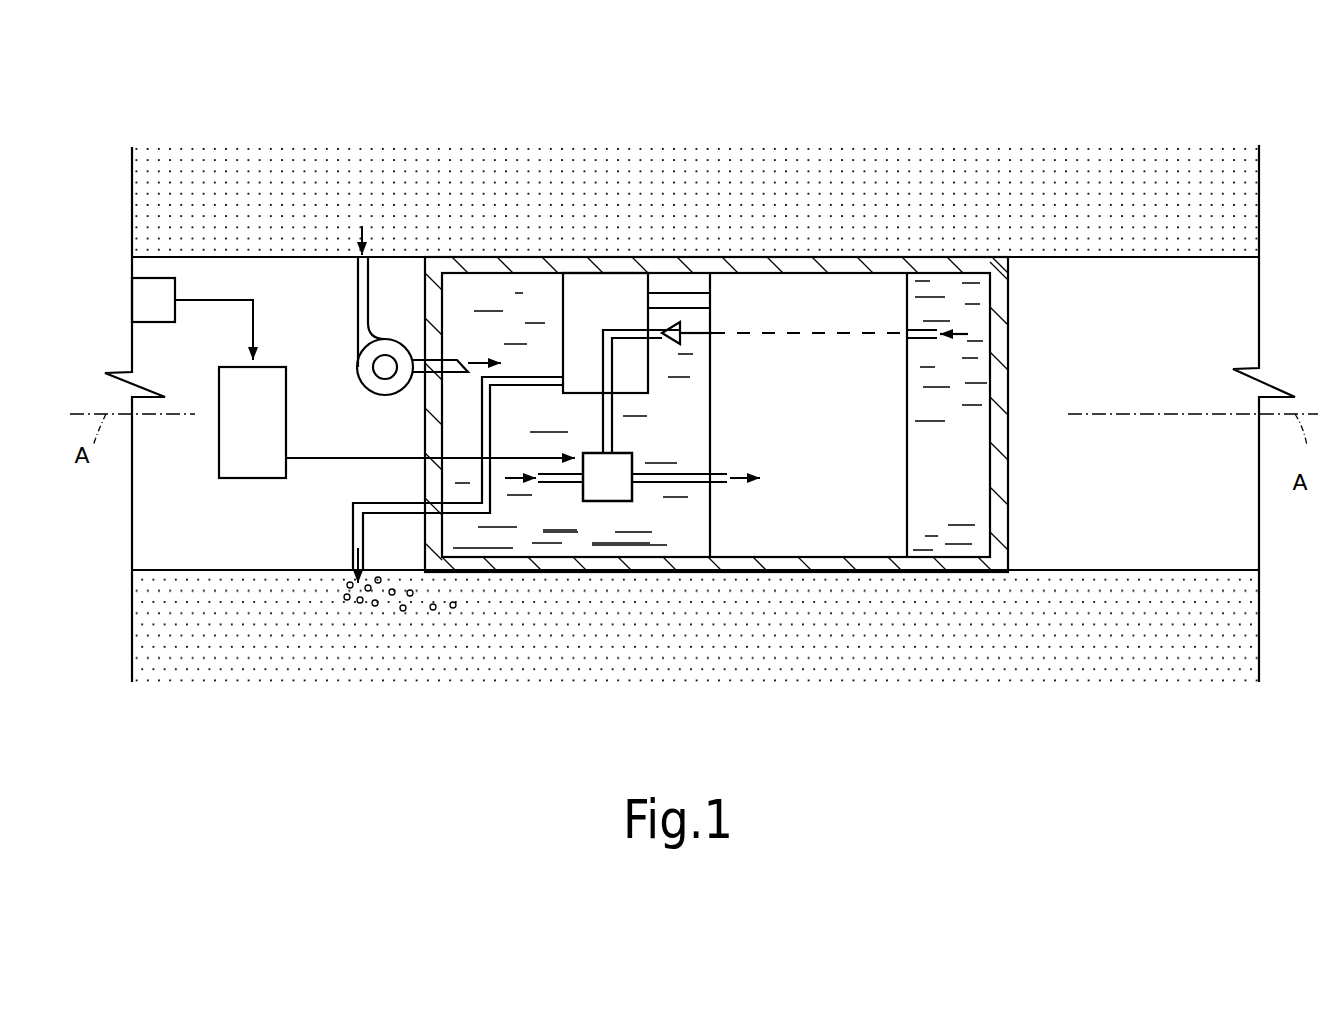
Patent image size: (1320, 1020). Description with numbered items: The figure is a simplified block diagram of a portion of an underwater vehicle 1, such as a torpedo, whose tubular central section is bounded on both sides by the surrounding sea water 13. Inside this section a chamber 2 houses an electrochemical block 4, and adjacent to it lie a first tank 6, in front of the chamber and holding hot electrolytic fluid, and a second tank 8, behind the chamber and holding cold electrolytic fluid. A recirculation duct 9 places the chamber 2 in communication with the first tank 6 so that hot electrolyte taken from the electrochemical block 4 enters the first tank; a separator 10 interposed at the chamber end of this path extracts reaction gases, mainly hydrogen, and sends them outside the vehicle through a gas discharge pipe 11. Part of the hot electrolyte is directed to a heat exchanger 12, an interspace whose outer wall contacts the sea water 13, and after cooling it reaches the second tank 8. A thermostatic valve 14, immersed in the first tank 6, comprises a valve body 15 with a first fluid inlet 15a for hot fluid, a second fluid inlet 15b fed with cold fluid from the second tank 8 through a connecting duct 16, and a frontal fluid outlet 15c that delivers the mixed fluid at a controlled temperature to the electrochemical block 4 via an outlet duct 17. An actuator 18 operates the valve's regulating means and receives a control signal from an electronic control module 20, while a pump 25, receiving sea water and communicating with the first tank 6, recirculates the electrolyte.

The underwater vehicle 1 is at (1037, 170).
The chamber 2 is at (812, 300).
The electrochemical block 4 is at (805, 514).
The first tank 6 is at (575, 508).
The second tank 8 is at (954, 546).
The recirculation duct 9 is at (676, 297).
The separator 10 is at (580, 317).
The gas discharge pipe 11 is at (352, 527).
The heat exchanger 12 is at (595, 257).
The sea water 13 is at (873, 205).
The thermostatic valve 14 is at (648, 454).
The valve body 15 is at (600, 488).
The first fluid inlet 15a is at (578, 489).
The second fluid inlet 15b is at (603, 451).
The fluid outlet 15c is at (637, 487).
The connecting duct 16 is at (923, 330).
The outlet duct 17 is at (697, 473).
The actuator 18 is at (240, 468).
The electronic control module 20 is at (161, 298).
The pump 25 is at (367, 361).